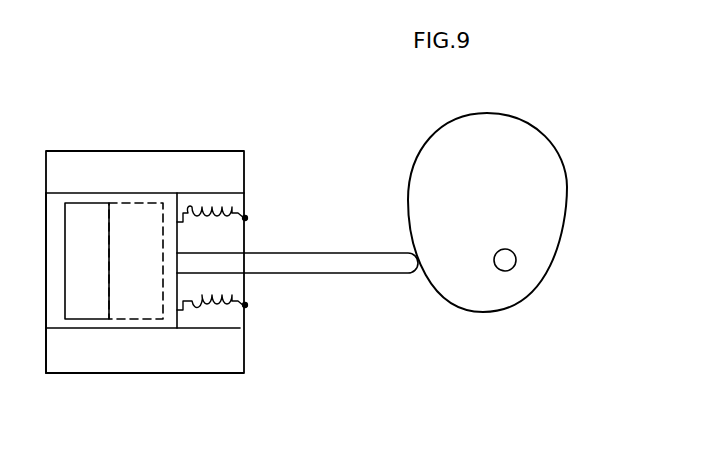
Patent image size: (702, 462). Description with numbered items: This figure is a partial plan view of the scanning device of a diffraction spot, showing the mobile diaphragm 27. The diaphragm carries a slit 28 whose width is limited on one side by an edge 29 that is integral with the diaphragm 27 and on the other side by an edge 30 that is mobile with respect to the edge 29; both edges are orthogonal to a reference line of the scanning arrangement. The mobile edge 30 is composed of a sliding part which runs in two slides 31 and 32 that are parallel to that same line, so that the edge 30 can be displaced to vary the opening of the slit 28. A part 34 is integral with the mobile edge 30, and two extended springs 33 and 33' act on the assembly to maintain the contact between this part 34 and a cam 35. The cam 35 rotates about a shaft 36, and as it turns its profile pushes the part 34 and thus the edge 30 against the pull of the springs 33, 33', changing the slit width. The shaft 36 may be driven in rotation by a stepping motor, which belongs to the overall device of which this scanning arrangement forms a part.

The mobile diaphragm 27 is at (150, 163).
The slit 28 is at (88, 297).
The edge 29 is at (58, 257).
The edge 30 is at (133, 297).
The slide 31 is at (208, 355).
The slide 32 is at (228, 175).
The extended spring 33 is at (241, 221).
The extended spring 33' is at (248, 300).
The part 34 is at (362, 263).
The cam 35 is at (547, 160).
The shaft 36 is at (505, 249).